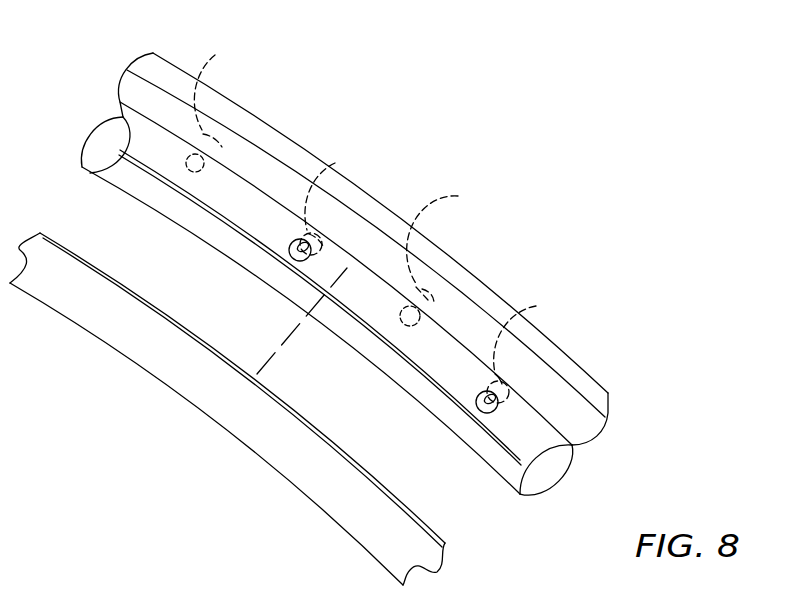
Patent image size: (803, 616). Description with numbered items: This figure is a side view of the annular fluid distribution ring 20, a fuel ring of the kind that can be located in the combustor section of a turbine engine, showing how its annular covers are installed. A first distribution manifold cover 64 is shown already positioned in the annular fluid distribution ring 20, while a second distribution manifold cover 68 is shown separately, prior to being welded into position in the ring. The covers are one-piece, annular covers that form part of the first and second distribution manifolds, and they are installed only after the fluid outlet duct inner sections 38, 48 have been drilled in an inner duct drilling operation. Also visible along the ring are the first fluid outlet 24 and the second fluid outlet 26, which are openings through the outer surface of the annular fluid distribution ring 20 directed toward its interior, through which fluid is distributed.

The annular fluid distribution device 20 is at (140, 92).
The first fluid outlet 24 is at (335, 163).
The second fluid outlet 26 is at (190, 173).
The fluid outlet duct inner section 38 is at (215, 55).
The fluid outlet duct inner section 48 is at (289, 249).
The first distribution manifold cover 64 is at (452, 266).
The second distribution manifold cover 68 is at (152, 376).